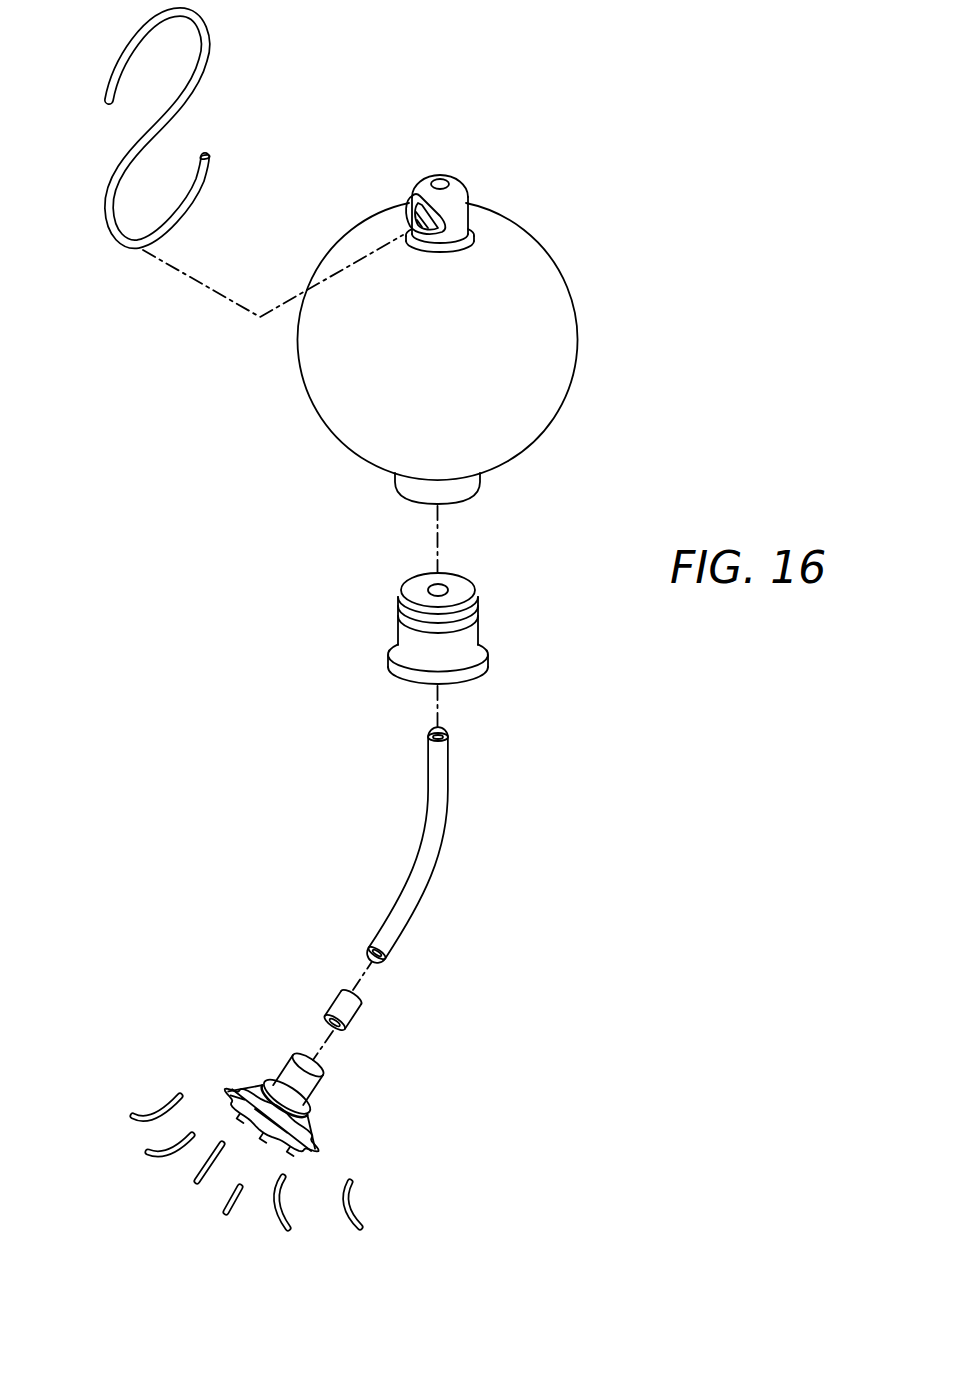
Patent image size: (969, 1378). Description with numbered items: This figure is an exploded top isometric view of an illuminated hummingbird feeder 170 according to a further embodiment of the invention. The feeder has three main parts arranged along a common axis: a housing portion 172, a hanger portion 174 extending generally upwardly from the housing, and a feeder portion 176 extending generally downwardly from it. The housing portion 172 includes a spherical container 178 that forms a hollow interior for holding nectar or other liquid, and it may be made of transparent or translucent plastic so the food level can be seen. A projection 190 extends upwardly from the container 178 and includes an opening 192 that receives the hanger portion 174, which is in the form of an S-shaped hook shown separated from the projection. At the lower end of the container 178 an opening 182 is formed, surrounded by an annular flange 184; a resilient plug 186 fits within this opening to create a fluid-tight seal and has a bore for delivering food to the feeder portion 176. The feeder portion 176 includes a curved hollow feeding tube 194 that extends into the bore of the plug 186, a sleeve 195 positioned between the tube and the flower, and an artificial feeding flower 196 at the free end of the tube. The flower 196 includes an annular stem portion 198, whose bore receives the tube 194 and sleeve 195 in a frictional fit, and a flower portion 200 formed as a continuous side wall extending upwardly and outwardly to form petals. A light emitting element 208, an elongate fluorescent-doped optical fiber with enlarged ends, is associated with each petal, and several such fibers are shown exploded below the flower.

The illuminated hummingbird feeder 170 is at (602, 100).
The housing portion 172 is at (496, 341).
The hanger portion 174 is at (209, 47).
The feeder portion 176 is at (534, 838).
The spherical container 178 is at (542, 363).
The opening 182 is at (439, 628).
The annular flange 184 is at (455, 492).
The plug 186 is at (392, 681).
The projection 190 is at (419, 200).
The opening 192 is at (405, 229).
The hollow feeding tube 194 is at (428, 850).
The sleeve 195 is at (352, 1008).
The artificial feeding flower 196 is at (418, 1162).
The stem portion 198 is at (249, 1085).
The flower portion 200 is at (296, 1067).
The light emitting element 208 is at (196, 1180).